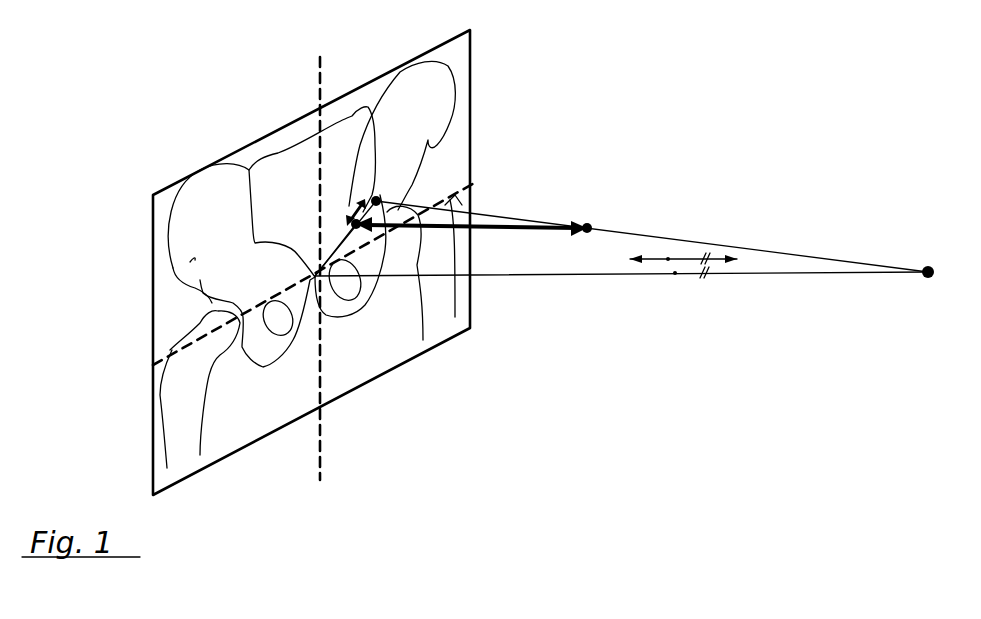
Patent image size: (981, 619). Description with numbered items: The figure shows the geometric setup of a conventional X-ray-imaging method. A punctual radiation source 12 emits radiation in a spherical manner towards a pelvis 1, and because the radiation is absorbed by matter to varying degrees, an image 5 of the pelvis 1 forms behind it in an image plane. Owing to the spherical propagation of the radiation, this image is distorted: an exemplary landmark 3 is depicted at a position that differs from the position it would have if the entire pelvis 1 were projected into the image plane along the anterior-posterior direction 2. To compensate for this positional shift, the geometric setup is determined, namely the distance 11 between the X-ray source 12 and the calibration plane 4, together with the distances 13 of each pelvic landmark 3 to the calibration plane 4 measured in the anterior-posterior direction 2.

The pelvis 1 is at (188, 227).
The anterior-posterior direction 2 is at (668, 259).
The landmark 3 is at (599, 210).
The calibration plane 4 is at (478, 124).
The image 5 is at (180, 294).
The distance 11 is at (675, 273).
The radiation source 12 is at (919, 285).
The distances 13 is at (487, 236).